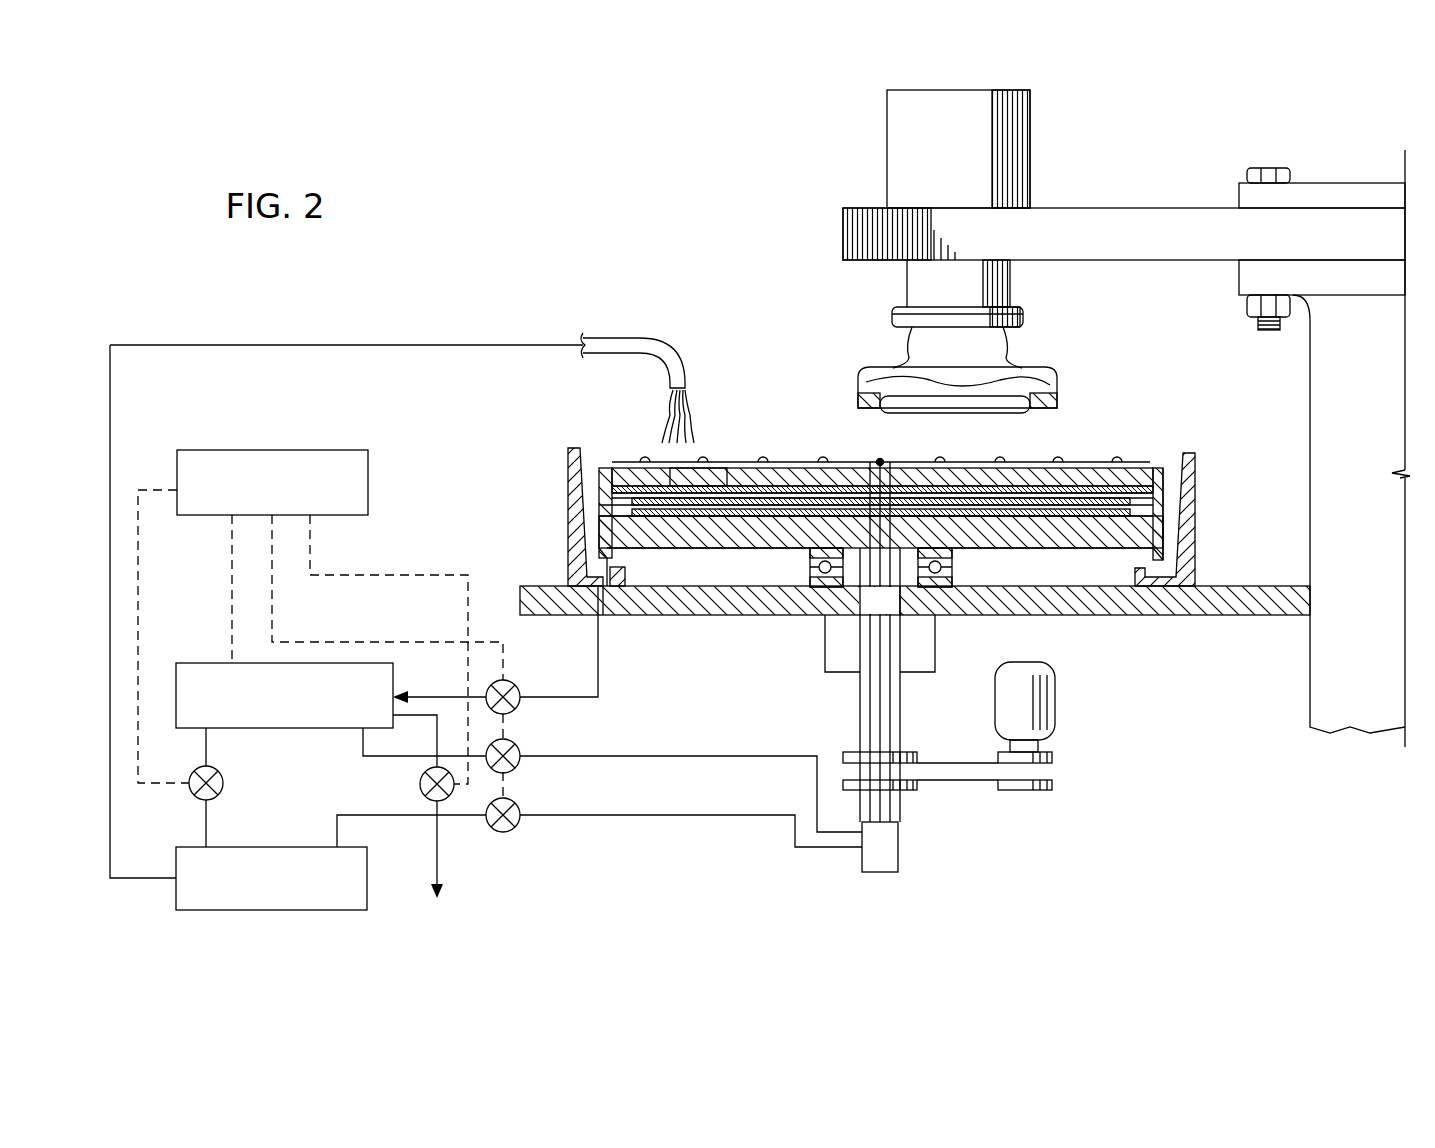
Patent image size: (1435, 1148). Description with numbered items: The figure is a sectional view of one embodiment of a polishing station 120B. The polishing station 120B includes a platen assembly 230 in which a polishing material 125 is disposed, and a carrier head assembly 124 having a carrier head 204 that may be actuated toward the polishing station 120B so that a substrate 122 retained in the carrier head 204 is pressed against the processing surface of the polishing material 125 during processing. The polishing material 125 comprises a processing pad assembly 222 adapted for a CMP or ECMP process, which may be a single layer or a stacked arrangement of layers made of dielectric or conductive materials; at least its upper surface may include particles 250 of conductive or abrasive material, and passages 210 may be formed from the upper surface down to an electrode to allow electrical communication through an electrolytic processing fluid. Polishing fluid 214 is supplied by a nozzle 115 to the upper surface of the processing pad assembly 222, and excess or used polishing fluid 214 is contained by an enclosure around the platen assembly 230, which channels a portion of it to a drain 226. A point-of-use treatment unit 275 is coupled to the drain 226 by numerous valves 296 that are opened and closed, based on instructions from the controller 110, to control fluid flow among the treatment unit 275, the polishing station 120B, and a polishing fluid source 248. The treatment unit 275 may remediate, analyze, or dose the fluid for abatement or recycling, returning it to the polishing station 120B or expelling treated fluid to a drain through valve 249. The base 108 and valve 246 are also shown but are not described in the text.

The polishing station 120B is at (734, 158).
The carrier head assembly 124 is at (858, 293).
The substrate 122 is at (897, 403).
The carrier head 204 is at (1048, 365).
The nozzle 115 is at (643, 338).
The polishing fluid 214 is at (690, 415).
The polishing material 125 is at (1109, 425).
The passages 210 is at (1030, 470).
The processing pad assembly 222 is at (792, 463).
The particles 250 is at (878, 459).
The platen assembly 230 is at (1170, 488).
The drain 226 is at (592, 596).
The base 108 is at (1232, 616).
The controller 110 is at (320, 624).
The point-of-use treatment unit 275 is at (284, 695).
The polishing fluid source 248 is at (238, 627).
The valve 246 is at (224, 783).
The valve 249 is at (420, 784).
The valves 296 is at (518, 708).